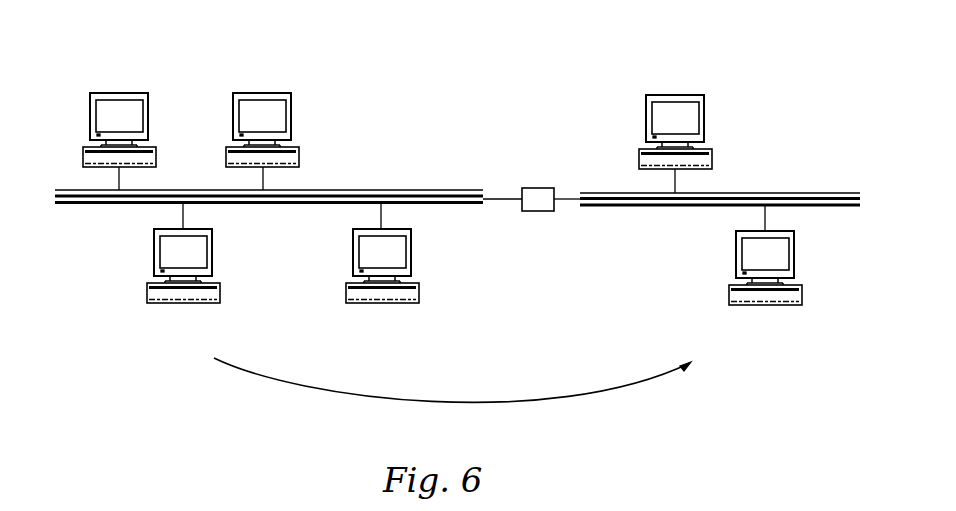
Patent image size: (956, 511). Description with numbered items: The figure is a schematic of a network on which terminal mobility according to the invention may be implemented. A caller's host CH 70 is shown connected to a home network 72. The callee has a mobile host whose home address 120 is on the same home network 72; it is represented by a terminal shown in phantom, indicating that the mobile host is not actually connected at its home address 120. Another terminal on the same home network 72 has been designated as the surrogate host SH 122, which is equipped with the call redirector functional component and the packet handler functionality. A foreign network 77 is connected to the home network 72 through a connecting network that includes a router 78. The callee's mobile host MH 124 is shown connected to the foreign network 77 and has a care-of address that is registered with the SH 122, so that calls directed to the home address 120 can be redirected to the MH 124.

The CH 70 is at (102, 62).
The home network 72 is at (108, 227).
The foreign network 77 is at (800, 171).
The router 78 is at (531, 188).
The home address 120 is at (212, 248).
The SH 122 is at (413, 247).
The MH 124 is at (735, 248).